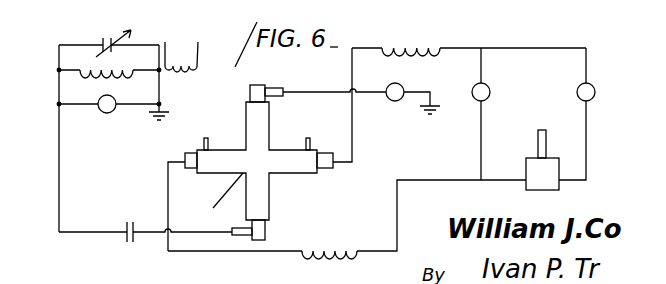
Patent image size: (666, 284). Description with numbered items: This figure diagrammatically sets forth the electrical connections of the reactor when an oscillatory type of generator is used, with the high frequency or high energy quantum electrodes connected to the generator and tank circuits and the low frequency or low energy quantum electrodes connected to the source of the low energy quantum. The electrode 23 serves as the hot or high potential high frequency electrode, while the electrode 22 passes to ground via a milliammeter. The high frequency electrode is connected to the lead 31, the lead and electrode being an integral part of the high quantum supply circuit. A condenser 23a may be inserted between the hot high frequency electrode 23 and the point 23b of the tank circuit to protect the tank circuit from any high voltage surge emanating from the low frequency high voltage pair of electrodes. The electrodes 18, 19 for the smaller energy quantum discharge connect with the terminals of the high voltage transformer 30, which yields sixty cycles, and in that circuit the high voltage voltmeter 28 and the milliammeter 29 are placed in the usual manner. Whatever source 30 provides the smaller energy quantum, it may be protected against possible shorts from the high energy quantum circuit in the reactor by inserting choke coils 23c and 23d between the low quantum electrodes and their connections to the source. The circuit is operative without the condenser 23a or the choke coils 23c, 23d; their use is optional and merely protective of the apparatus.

The electrode 18 is at (190, 152).
The electrode 19 is at (325, 168).
The electrode 22 is at (250, 92).
The electrode 23 is at (267, 229).
The condenser 23a is at (123, 236).
The point 23b is at (59, 72).
The choke coil 23c is at (432, 30).
The choke coil 23d is at (347, 219).
The high voltage voltmeter 28 is at (492, 90).
The milliammeter 29 is at (596, 82).
The high voltage transformer 30 is at (526, 163).
The lead 31 is at (59, 170).